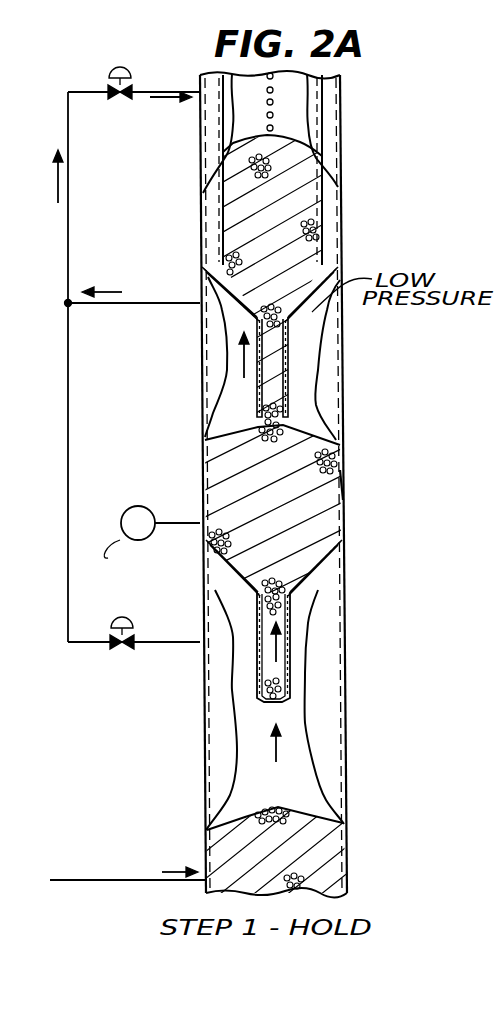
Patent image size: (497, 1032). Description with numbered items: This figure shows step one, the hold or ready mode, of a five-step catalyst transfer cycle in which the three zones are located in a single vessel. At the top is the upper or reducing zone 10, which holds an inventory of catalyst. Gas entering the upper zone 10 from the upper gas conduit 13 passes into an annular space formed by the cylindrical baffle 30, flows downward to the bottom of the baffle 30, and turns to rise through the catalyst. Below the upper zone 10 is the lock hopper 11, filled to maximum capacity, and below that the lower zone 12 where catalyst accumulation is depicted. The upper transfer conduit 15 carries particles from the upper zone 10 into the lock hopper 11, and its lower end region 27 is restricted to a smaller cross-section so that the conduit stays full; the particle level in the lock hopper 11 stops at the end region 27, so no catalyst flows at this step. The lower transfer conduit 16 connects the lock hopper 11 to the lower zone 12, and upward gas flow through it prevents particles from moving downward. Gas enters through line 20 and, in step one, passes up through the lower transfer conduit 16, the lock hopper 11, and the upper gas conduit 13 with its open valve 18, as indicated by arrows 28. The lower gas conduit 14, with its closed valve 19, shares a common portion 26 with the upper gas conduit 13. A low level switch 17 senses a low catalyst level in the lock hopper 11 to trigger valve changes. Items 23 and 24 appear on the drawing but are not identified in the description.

The upper zone 10 is at (288, 113).
The lock hopper 11 is at (303, 340).
The lower zone 12 is at (307, 603).
The upper gas conduit 13 is at (178, 60).
The lower gas conduit 14 is at (68, 372).
The upper transfer conduit 15 is at (290, 367).
The lower transfer conduit 16 is at (200, 625).
The low level switch 17 is at (145, 507).
The valve 18 is at (112, 78).
The valve 19 is at (122, 622).
The line 20 is at (125, 880).
The column wall 23 is at (345, 491).
The junction 24 is at (66, 303).
The common portion 26 is at (157, 304).
The end region 27 is at (287, 423).
The arrows 28 is at (186, 100).
The cylindrical baffle 30 is at (330, 203).